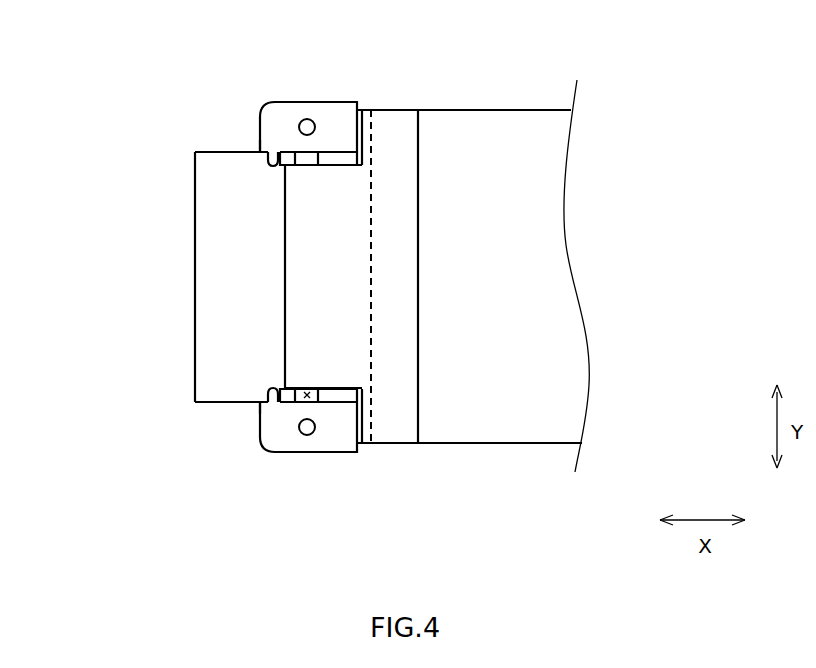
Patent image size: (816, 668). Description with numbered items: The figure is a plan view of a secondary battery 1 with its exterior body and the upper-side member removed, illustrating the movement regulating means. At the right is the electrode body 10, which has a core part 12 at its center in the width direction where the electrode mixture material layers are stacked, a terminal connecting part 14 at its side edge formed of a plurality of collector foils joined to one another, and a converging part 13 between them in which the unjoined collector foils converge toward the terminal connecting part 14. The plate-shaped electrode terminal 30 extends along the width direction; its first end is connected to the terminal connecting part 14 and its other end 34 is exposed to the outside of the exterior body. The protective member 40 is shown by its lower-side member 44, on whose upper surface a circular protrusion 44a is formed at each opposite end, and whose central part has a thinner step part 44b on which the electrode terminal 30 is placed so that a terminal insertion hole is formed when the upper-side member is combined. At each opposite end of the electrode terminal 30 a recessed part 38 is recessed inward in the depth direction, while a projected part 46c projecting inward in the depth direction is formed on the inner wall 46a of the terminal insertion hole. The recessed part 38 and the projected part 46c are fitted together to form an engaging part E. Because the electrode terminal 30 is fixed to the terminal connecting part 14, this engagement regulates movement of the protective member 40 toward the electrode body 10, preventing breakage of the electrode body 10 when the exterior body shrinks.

The secondary battery 1 is at (38, 91).
The electrode body 10 is at (660, 182).
The core part 12 is at (523, 207).
The converging part 13 is at (416, 232).
The terminal connecting part 14 is at (356, 292).
The electrode terminal 30 is at (237, 253).
The other end (second end) 34 is at (215, 310).
The recessed part 38 is at (268, 164).
The protective member 40 is at (306, 103).
The lower-side member 44 is at (343, 107).
The protrusion 44a is at (302, 122).
The step part 44b is at (305, 398).
The inner wall 46a is at (345, 162).
The projected part 46c is at (271, 148).
The engaging part E is at (182, 45).